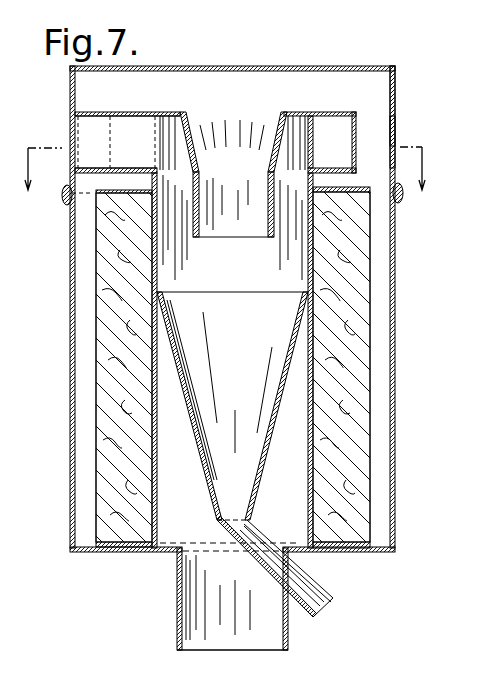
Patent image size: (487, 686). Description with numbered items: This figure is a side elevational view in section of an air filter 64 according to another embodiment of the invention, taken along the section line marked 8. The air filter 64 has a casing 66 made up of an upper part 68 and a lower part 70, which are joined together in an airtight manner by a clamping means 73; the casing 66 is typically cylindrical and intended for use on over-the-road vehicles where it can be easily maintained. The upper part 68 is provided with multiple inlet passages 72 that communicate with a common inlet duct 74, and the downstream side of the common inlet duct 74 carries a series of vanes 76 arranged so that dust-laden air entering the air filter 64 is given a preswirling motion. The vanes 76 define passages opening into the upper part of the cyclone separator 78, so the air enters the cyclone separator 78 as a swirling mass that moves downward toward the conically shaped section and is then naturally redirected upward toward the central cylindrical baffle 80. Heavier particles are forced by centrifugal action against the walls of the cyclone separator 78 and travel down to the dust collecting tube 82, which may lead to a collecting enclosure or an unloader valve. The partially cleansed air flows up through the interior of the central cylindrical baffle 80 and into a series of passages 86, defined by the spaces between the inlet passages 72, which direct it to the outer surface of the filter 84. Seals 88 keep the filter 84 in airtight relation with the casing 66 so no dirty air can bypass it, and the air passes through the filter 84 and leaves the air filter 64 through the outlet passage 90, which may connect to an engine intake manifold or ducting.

The section line 8- 8 is at (226, 182).
The air filter 64 is at (322, 62).
The casing 66 is at (395, 240).
The upper part 68 is at (395, 94).
The lower part 70 is at (395, 477).
The inlet passages 72 is at (83, 132).
The clamping means 73 is at (66, 205).
The common inlet duct 74 is at (326, 127).
The vanes 76 is at (163, 128).
The cyclone separator 78 is at (258, 375).
The central cylindrical baffle 80 is at (237, 222).
The dust collecting tube 82 is at (311, 587).
The filter 84 is at (358, 388).
The passages 86 is at (375, 137).
The seals 88 is at (371, 545).
The outlet passage 90 is at (223, 632).